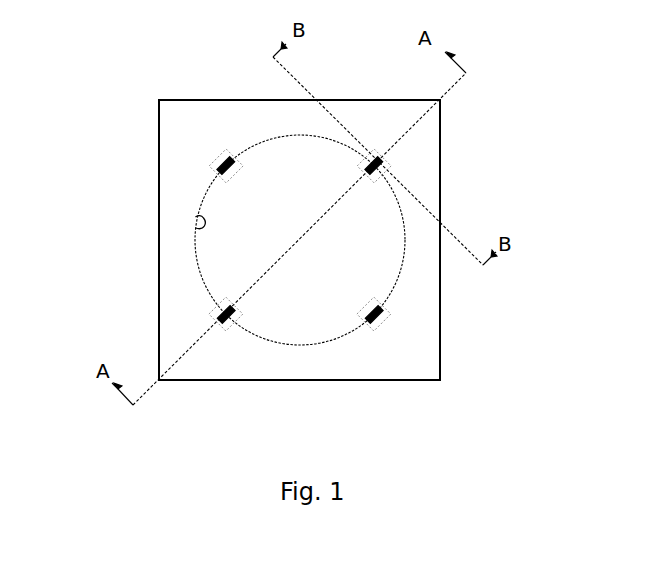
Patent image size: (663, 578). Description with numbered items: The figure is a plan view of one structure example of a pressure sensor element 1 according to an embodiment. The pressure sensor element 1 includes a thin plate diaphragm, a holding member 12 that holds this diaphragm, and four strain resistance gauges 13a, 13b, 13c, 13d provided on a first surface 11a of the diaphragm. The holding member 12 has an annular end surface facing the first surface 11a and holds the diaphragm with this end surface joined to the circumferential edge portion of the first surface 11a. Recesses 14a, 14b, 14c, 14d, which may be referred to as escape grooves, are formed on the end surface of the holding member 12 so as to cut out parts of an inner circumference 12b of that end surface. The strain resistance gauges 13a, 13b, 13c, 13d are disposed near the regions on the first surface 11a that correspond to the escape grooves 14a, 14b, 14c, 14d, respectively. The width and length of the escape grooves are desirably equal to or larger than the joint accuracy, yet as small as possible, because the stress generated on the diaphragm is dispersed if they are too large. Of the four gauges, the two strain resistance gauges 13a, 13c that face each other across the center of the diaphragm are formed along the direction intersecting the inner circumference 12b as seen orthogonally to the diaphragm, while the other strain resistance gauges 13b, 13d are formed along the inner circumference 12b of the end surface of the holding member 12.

The pressure sensor element 1 is at (92, 59).
The first surface 11a is at (328, 331).
The holding member 12 is at (224, 100).
The inner circumference 12b is at (197, 231).
The strain resistance gauge 13a is at (382, 162).
The strain resistance gauge 13b is at (382, 312).
The strain resistance gauge 13c is at (229, 333).
The strain resistance gauge 13d is at (218, 167).
The recess 14a is at (385, 157).
The recess 14b is at (385, 324).
The recess 14c is at (215, 325).
The recess 14d is at (216, 153).